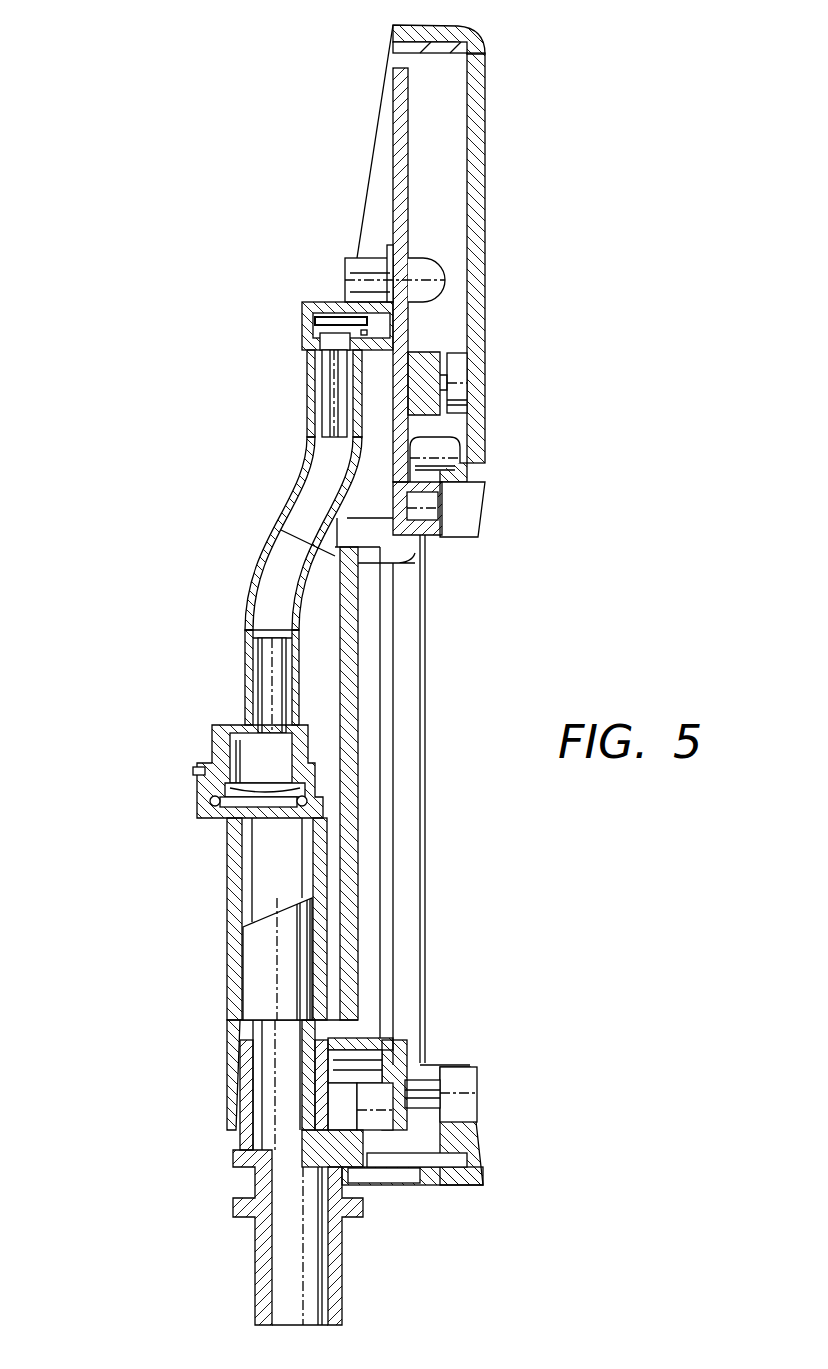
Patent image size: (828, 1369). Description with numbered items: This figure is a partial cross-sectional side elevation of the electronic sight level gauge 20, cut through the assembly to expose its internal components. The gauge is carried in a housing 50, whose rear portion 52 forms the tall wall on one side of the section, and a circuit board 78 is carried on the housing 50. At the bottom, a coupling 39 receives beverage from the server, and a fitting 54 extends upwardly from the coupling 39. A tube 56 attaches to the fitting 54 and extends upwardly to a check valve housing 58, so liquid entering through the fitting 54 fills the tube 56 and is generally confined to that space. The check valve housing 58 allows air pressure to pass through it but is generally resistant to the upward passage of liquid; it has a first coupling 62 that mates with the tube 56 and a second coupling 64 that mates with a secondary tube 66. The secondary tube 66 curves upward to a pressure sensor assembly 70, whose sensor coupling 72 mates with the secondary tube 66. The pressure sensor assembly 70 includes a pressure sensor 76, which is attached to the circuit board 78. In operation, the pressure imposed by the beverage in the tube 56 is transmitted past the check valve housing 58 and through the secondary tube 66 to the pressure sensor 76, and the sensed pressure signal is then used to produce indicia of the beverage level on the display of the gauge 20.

The level gauge 20 is at (204, 134).
The coupling 39 is at (242, 1268).
The housing 50 is at (500, 160).
The rear portion 52 is at (476, 51).
The fitting 54 is at (244, 1090).
The tube 56 is at (237, 1023).
The check valve housing 58 is at (180, 795).
The first coupling 62 is at (247, 896).
The second coupling 64 is at (249, 694).
The secondary tube 66 is at (257, 571).
The pressure sensor assembly 70 is at (283, 328).
The sensor coupling 72 is at (317, 417).
The pressure sensor 76 is at (333, 320).
The circuit board 78 is at (390, 172).